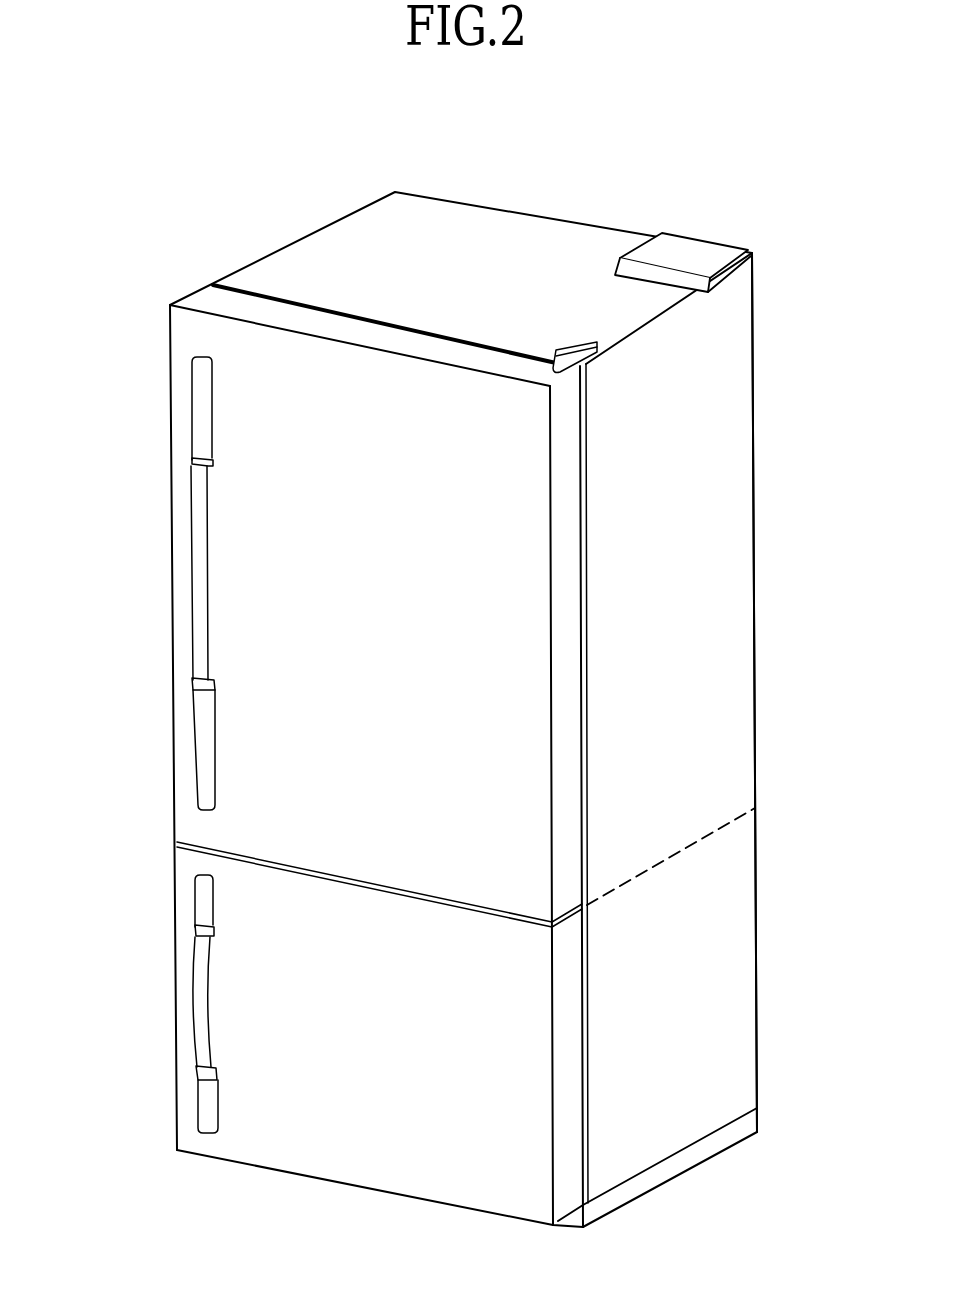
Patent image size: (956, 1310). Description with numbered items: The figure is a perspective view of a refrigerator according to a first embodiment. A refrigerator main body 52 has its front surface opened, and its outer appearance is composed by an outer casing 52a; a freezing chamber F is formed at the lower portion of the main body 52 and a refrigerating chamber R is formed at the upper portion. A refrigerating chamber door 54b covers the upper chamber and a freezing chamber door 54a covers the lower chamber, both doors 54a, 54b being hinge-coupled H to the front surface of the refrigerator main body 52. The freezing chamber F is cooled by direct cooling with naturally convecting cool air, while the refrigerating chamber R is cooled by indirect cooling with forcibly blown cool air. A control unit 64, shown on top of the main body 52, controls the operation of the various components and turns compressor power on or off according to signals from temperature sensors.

The refrigerator main body 52 is at (477, 237).
The outer casing 52a is at (747, 543).
The freezing chamber door 54a is at (227, 1000).
The refrigerating chamber door 54b is at (227, 583).
The control unit 64 is at (687, 253).
The hinge coupling H is at (577, 350).
The refrigerating chamber R is at (677, 612).
The freezing chamber F is at (684, 1035).